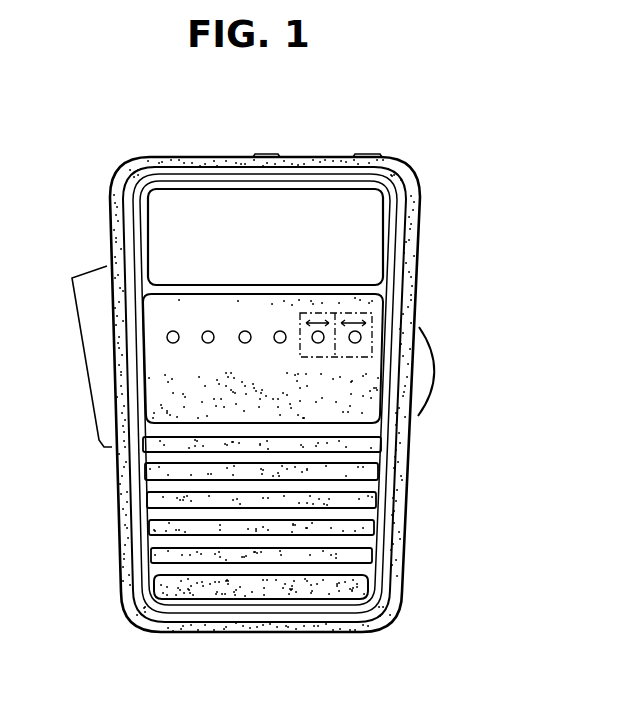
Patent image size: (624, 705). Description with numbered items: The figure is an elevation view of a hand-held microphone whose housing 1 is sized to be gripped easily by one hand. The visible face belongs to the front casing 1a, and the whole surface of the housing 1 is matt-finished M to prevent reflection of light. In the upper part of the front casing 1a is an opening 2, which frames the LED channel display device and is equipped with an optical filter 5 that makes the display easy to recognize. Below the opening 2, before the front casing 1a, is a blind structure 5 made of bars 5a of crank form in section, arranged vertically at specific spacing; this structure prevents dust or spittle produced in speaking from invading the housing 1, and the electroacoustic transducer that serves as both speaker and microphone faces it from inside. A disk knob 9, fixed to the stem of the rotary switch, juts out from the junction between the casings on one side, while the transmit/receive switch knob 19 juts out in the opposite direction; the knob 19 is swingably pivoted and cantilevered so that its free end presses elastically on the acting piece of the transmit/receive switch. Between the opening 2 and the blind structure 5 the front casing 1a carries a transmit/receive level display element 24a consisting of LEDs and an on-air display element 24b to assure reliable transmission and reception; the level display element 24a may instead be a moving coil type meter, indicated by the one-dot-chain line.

The housing 1 is at (422, 168).
The front casing 1a is at (395, 280).
The opening 2 is at (391, 242).
The blind structure 5 is at (293, 192).
The bars 5a is at (370, 555).
The disk knob 9 is at (432, 362).
The transmit/receive switch knob 19 is at (73, 317).
The transmit/receive level display element 24a is at (350, 343).
The on air display element 24b is at (167, 338).
The matt finish M is at (358, 404).